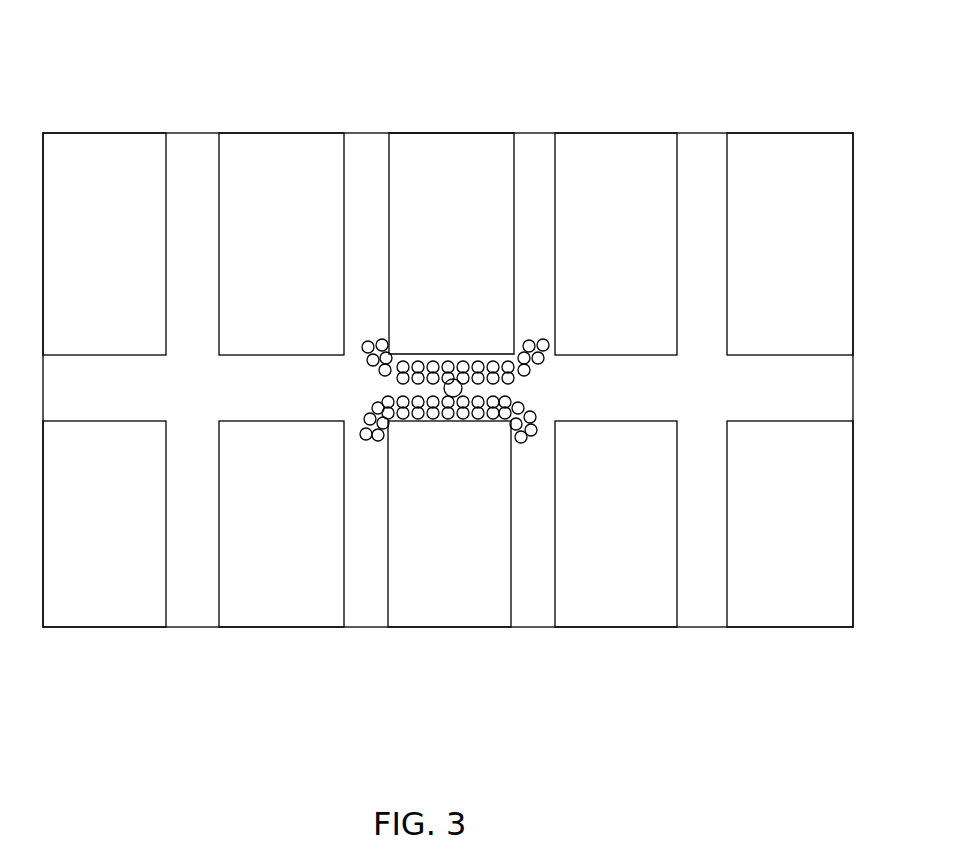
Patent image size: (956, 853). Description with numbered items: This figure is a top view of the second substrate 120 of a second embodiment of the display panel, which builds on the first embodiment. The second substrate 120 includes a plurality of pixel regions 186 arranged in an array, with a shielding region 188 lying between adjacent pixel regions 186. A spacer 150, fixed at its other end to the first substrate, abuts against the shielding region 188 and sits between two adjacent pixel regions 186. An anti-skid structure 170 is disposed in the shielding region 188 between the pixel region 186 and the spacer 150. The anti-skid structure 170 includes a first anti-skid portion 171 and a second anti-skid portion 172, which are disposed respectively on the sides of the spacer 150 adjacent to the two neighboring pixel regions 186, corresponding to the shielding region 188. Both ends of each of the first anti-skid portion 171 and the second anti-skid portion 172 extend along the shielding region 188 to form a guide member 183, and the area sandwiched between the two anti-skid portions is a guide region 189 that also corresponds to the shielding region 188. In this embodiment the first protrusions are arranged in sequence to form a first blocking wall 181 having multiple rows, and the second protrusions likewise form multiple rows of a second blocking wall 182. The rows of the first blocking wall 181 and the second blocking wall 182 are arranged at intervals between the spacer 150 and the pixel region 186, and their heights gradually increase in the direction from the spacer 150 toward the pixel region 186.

The second substrate 120 is at (170, 84).
The shielding region 188 is at (448, 218).
The guide region 189 is at (448, 532).
The pixel region 186 is at (451, 217).
The spacer 150 is at (445, 537).
The first blocking wall 181 is at (418, 226).
The second blocking wall 182 is at (464, 537).
The guide member 183 is at (307, 515).
The anti-skid structure 170 is at (601, 228).
The first anti-skid portion 171 is at (540, 229).
The second anti-skid portion 172 is at (530, 70).